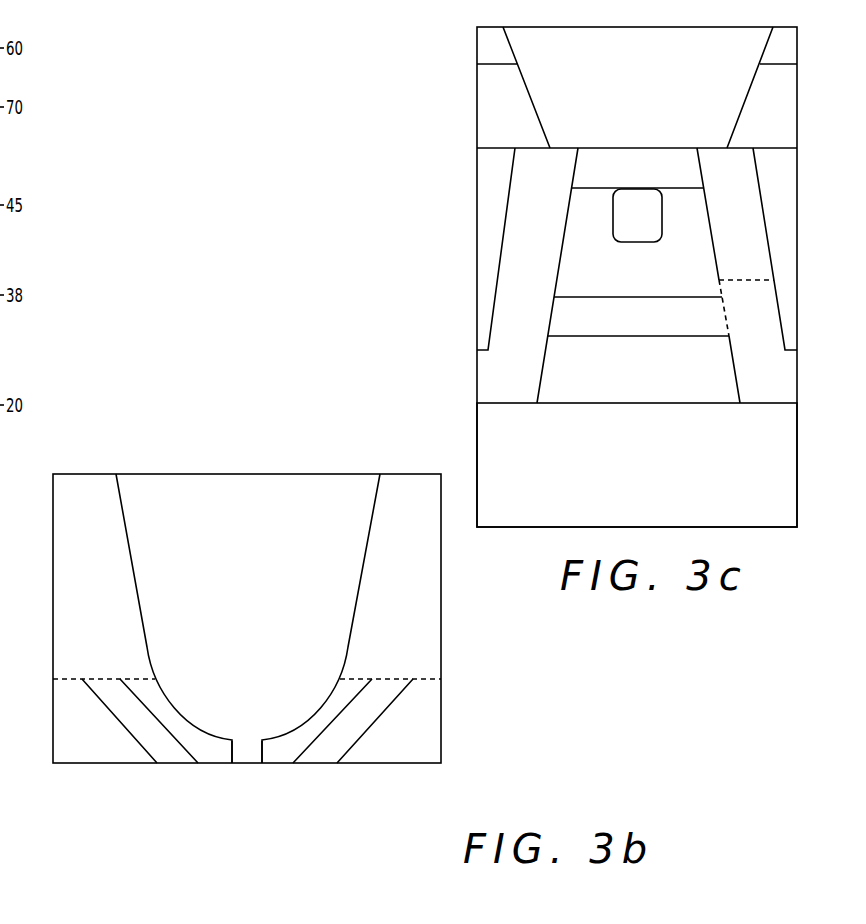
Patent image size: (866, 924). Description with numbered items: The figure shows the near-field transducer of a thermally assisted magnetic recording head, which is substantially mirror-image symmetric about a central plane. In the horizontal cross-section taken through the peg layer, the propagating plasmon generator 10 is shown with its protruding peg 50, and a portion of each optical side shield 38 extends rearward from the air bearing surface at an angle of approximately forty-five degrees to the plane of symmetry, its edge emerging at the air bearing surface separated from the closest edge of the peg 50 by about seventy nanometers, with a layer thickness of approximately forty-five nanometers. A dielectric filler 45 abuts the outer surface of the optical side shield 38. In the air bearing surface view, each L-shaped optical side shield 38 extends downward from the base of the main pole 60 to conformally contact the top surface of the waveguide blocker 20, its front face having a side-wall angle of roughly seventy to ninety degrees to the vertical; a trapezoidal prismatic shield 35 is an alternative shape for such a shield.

In FIG. 3B, the propagating plasmon generator 10 is at (325, 628).
In FIG. 3C, the waveguide blocker 20 is at (787, 428).
In FIG. 3C, the optical side shield of trapezoidal prismatic shape 35 is at (785, 298).
In FIG. 3C, the optical side shield 38 is at (747, 239).
In FIG. 3B, the optical side shield 38 is at (348, 727).
In FIG. 3C, the dielectric filler 45 is at (785, 173).
In FIG. 3B, the dielectric filler 45 is at (430, 702).
In FIG. 3B, the peg 50 is at (243, 750).
In FIG. 3C, the main pole 60 is at (737, 46).